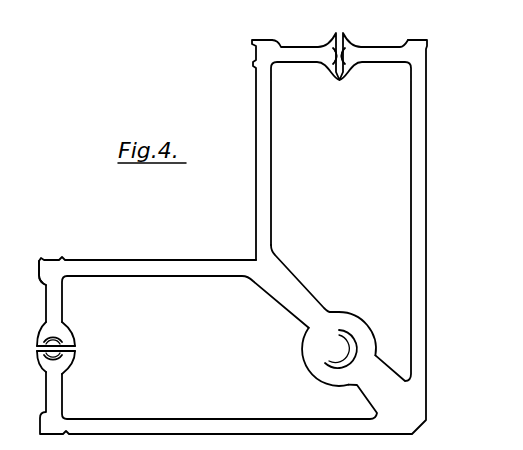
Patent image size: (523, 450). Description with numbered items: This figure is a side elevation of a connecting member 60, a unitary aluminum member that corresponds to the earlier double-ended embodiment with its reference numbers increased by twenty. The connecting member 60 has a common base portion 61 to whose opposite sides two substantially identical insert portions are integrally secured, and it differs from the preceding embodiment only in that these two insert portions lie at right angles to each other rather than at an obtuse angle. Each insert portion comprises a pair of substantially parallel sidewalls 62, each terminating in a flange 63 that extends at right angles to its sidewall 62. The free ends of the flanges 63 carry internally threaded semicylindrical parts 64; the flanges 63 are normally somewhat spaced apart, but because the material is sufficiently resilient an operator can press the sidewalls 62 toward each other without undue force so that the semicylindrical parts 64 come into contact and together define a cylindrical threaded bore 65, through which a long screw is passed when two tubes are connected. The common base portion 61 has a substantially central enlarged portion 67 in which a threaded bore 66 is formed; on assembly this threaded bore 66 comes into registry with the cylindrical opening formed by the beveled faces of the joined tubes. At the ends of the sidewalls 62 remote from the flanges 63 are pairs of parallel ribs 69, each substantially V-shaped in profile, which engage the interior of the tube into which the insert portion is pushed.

The connecting member 60 is at (175, 249).
The common base portion 61 is at (282, 283).
The sidewalls 62 is at (412, 155).
The flanges 63 is at (59, 298).
The semicylindrical parts 64 is at (340, 80).
The threaded bore 65 is at (60, 349).
The threaded bore 66 is at (332, 350).
The central enlarged portion 67 is at (322, 368).
The parallel ribs 69 is at (259, 56).